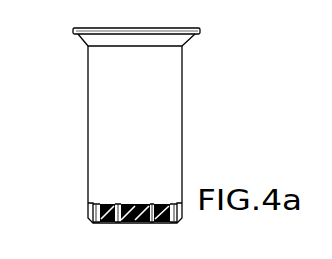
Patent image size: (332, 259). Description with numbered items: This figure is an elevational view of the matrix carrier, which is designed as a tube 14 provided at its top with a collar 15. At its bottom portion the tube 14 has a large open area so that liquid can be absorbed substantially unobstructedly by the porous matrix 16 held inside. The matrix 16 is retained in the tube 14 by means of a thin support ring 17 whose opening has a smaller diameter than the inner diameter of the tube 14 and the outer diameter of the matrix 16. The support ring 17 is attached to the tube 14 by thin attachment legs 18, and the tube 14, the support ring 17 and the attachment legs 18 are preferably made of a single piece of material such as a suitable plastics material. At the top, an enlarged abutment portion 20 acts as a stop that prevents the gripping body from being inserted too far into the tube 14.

The tube 14 is at (174, 83).
The collar 15 is at (200, 29).
The porous matrix 16 is at (134, 223).
The support ring 17 is at (162, 223).
The attachment legs 18 is at (151, 203).
The enlarged abutment portion 20 is at (85, 45).